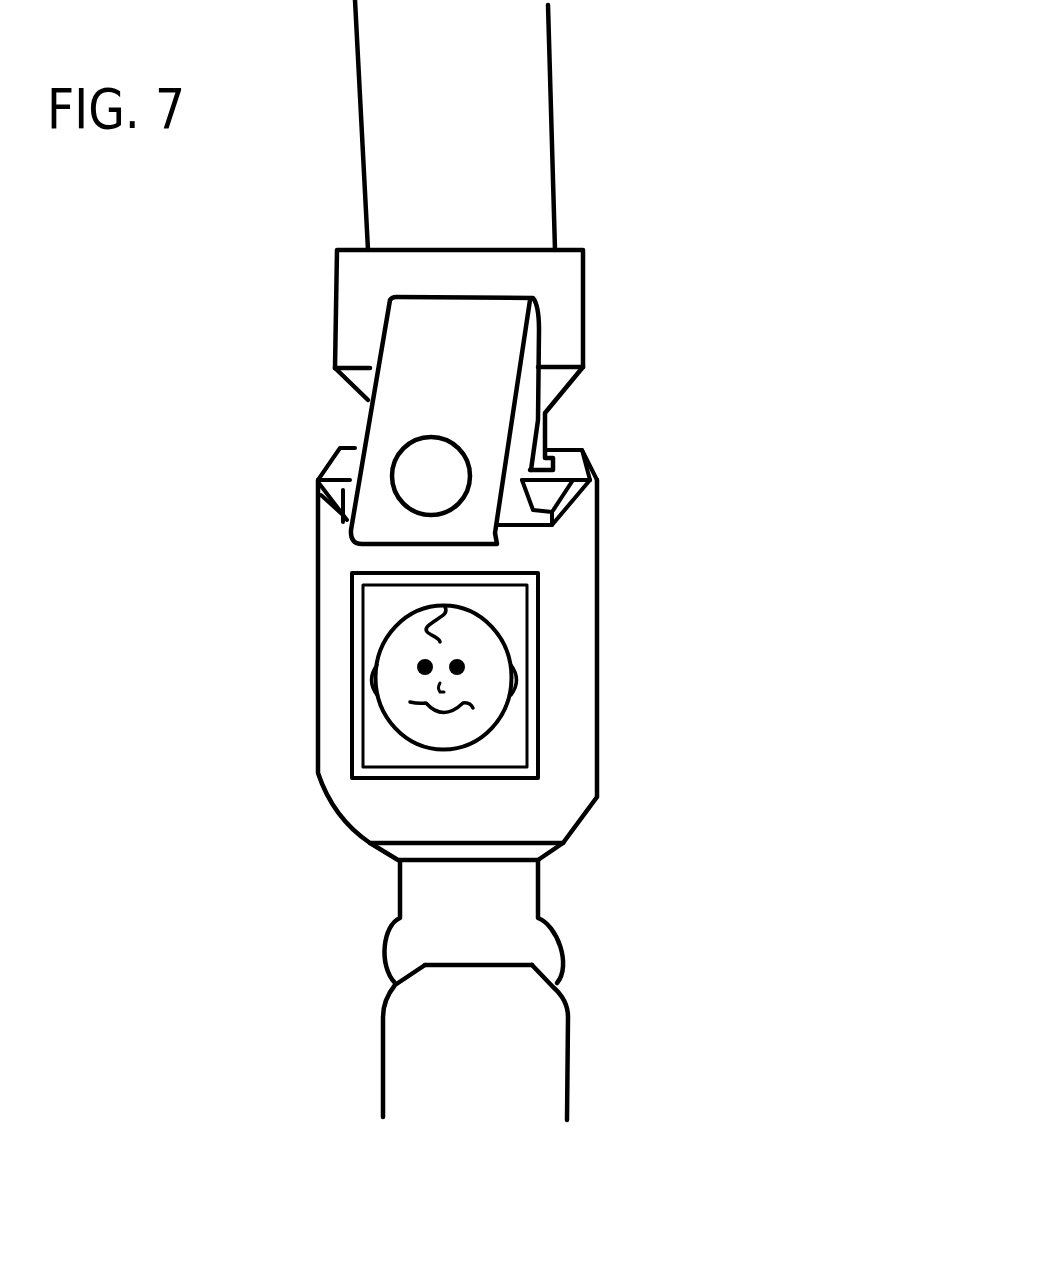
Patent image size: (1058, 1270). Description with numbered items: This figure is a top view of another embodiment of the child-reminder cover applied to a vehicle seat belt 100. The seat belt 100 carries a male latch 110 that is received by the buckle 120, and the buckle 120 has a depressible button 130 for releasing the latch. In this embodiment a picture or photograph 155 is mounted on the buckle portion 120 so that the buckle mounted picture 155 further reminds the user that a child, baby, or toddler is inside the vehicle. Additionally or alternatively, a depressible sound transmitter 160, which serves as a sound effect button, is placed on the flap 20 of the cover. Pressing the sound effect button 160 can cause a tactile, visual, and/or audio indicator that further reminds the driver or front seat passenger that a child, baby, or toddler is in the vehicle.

The seat belt 100 is at (533, 80).
The male latch 110 is at (560, 285).
The flap 20 is at (440, 337).
The depressible sound transmitter 160 is at (420, 480).
The depressible button 130 is at (548, 495).
The buckle 120 is at (532, 848).
The buckle mounted picture 155 is at (530, 680).